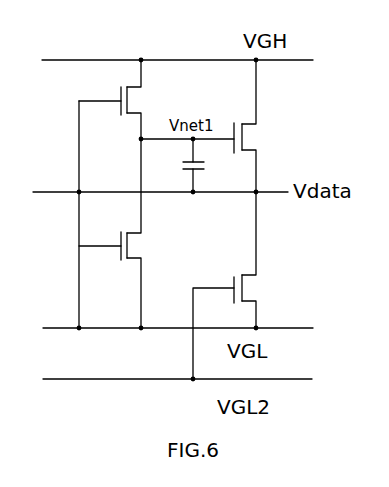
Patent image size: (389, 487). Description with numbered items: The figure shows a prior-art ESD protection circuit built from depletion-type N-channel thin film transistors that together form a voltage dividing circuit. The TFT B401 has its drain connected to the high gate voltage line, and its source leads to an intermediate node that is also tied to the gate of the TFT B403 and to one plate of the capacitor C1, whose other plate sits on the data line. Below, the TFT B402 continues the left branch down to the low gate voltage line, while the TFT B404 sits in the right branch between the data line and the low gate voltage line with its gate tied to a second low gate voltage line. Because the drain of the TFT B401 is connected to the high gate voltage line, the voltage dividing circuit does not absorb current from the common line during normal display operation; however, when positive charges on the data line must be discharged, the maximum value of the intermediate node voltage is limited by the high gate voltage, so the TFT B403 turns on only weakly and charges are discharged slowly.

The TFT B401 is at (155, 101).
The TFT B402 is at (155, 250).
The TFT B403 is at (256, 141).
The TFT B404 is at (256, 291).
The capacitor C1 is at (212, 164).